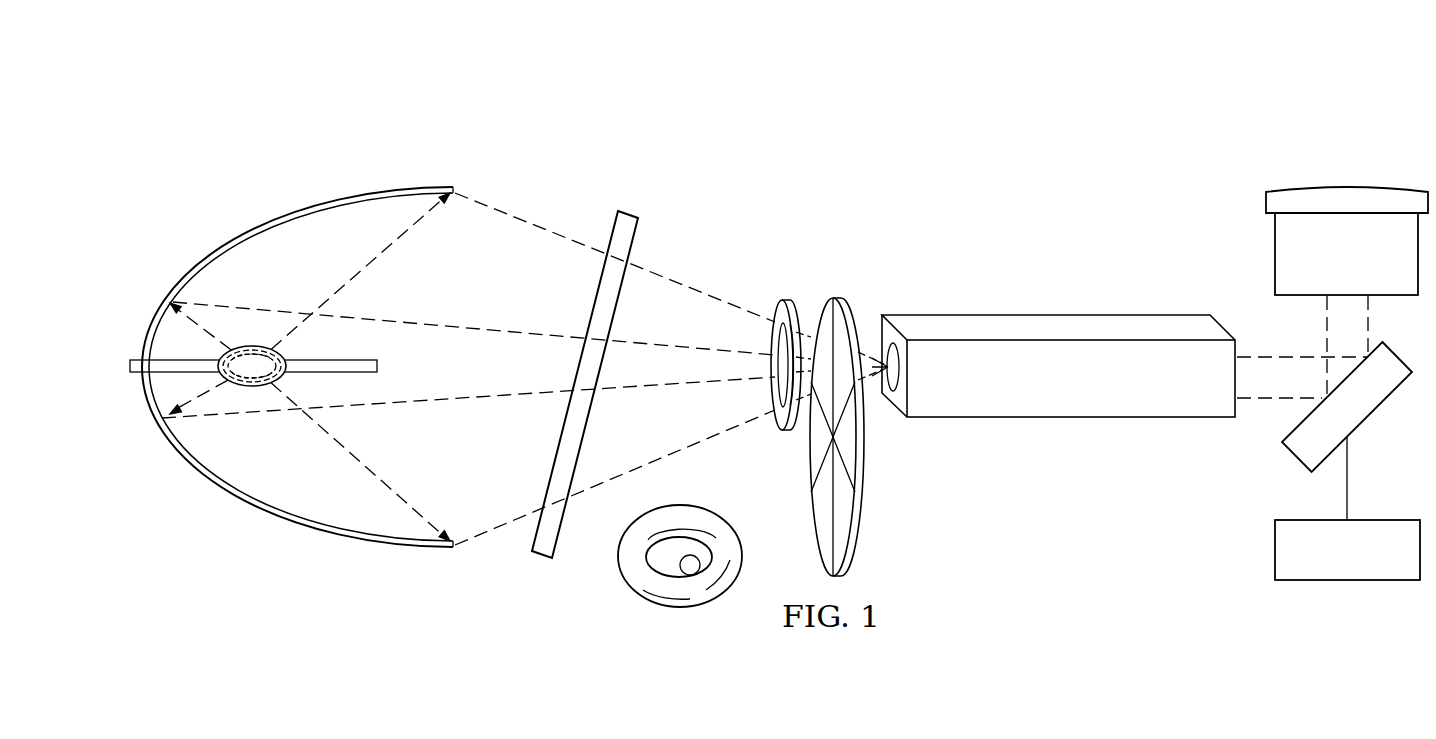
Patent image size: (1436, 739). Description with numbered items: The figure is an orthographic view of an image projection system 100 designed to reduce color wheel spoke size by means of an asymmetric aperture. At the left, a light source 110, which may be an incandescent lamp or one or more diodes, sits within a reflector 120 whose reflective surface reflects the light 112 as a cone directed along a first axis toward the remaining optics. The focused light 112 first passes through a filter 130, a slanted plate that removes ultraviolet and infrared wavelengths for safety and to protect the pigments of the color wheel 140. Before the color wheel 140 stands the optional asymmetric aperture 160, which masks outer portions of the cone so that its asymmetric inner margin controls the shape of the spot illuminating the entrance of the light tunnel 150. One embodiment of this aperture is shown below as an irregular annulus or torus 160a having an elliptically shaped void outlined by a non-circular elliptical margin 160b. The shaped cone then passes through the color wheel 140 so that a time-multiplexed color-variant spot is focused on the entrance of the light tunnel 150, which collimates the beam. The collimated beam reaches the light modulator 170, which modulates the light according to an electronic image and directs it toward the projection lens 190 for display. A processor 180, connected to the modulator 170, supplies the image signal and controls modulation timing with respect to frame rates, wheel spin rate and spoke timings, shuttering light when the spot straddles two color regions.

The image projection system 100 is at (703, 143).
The light source 110 is at (251, 388).
The light 112 is at (437, 322).
The reflector 120 is at (272, 216).
The filter 130 is at (595, 299).
The color wheel 140 is at (838, 297).
The light tunnel 150 is at (1062, 322).
The asymmetric aperture 160 is at (782, 297).
The torus 160a is at (622, 574).
The elliptical margin 160b is at (700, 576).
The light modulator 170 is at (1361, 424).
The processor 180 is at (1275, 550).
The projection lens 190 is at (1275, 252).